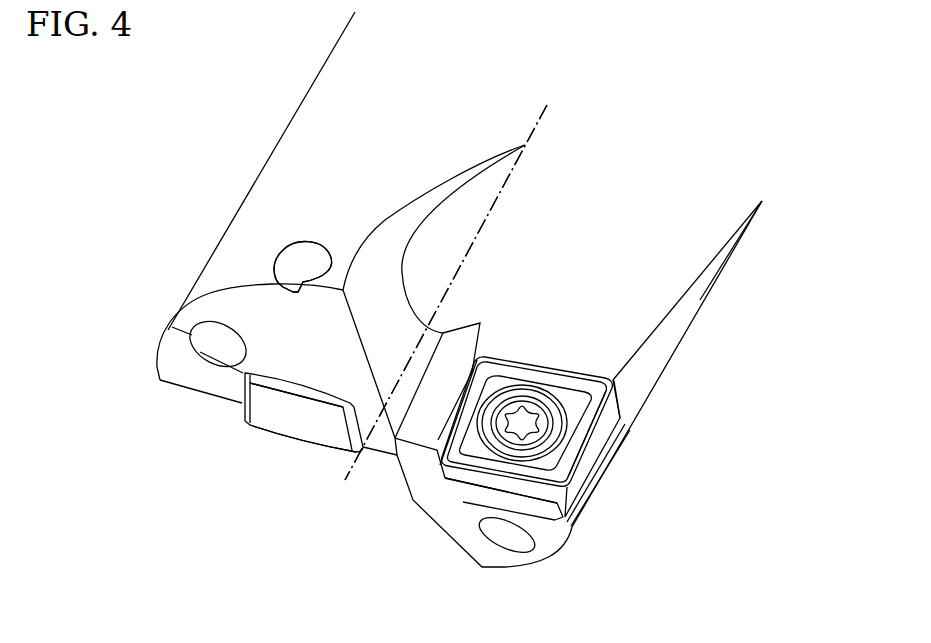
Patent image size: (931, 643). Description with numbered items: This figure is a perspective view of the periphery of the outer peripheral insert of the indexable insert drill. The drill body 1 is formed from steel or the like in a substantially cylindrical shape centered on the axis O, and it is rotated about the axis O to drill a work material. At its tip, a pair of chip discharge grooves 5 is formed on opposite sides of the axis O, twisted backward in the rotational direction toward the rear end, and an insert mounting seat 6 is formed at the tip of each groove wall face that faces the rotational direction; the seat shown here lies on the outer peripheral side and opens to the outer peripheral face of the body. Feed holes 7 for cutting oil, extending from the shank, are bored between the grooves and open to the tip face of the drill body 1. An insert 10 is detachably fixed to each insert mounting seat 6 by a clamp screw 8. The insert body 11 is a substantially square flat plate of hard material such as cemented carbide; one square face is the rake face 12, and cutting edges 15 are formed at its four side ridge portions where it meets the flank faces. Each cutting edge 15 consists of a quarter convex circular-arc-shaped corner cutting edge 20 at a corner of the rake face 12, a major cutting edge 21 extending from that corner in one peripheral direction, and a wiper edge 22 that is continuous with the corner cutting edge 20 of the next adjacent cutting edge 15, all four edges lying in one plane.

The drill body 1 is at (265, 66).
The axis O is at (547, 108).
The chip discharge groove 5 is at (710, 231).
The insert mounting seat 6 is at (288, 365).
The feed hole 7 is at (210, 337).
The clamp screw 8 is at (518, 413).
The insert 10 is at (250, 437).
The insert body 11 is at (267, 402).
The rake face 12 is at (457, 425).
The cutting edge 15 is at (298, 440).
The corner cutting edge 20 is at (530, 513).
The major cutting edge 21 is at (517, 493).
The wiper edge 22 is at (570, 478).